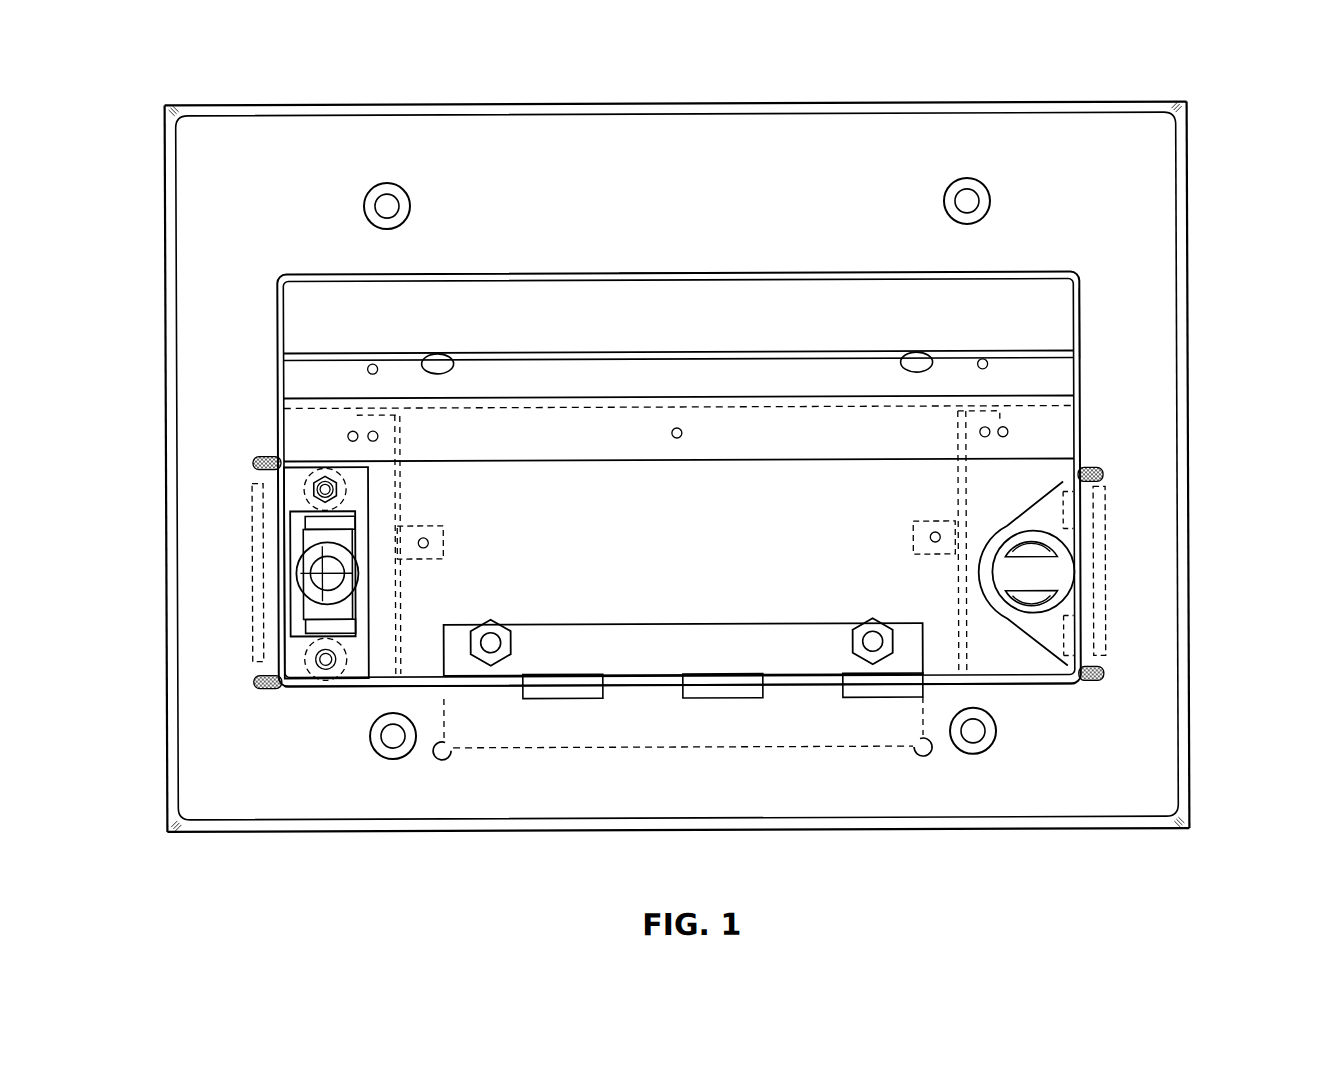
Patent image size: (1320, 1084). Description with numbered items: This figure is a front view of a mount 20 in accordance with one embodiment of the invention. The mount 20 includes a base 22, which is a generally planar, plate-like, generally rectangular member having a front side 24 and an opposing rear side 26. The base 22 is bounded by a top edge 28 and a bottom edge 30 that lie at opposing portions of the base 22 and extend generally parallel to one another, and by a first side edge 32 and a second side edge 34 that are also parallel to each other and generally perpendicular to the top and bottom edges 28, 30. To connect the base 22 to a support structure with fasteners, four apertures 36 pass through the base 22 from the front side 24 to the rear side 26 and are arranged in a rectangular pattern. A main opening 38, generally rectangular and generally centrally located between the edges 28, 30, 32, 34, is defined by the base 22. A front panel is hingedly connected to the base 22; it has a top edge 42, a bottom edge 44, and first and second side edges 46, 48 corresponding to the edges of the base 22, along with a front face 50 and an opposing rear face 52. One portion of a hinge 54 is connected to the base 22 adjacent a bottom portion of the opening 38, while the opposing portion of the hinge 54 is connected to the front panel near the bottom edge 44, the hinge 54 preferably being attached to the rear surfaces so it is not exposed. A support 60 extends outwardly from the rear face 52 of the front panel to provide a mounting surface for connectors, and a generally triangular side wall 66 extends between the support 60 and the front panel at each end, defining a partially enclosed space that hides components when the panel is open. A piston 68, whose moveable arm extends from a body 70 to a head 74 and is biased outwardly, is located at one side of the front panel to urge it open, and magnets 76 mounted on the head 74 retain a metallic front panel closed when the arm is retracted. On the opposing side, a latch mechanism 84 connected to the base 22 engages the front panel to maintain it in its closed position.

The mount 20 is at (1205, 172).
The base 22 is at (1160, 247).
The front side 24 is at (1162, 770).
The rear side 26 is at (1190, 635).
The top edge 28 is at (1128, 103).
The bottom edge 30 is at (1127, 830).
The first side edge 32 is at (1187, 520).
The second side edge 34 is at (166, 540).
The apertures 36 is at (396, 203).
The main opening 38 is at (1080, 322).
The top edge 42 is at (796, 273).
The bottom edge 44 is at (348, 688).
The first side edge 46 is at (302, 337).
The second side edge 48 is at (282, 410).
The front face 50 is at (500, 300).
The rear face 52 is at (706, 272).
The hinge 54 is at (590, 742).
The support 60 is at (768, 397).
The side wall 66 is at (402, 447).
The piston 68 is at (1101, 573).
The body 70 is at (1048, 507).
The head 74 is at (995, 582).
The magnets 76 is at (1052, 556).
The latch mechanism 84 is at (375, 522).